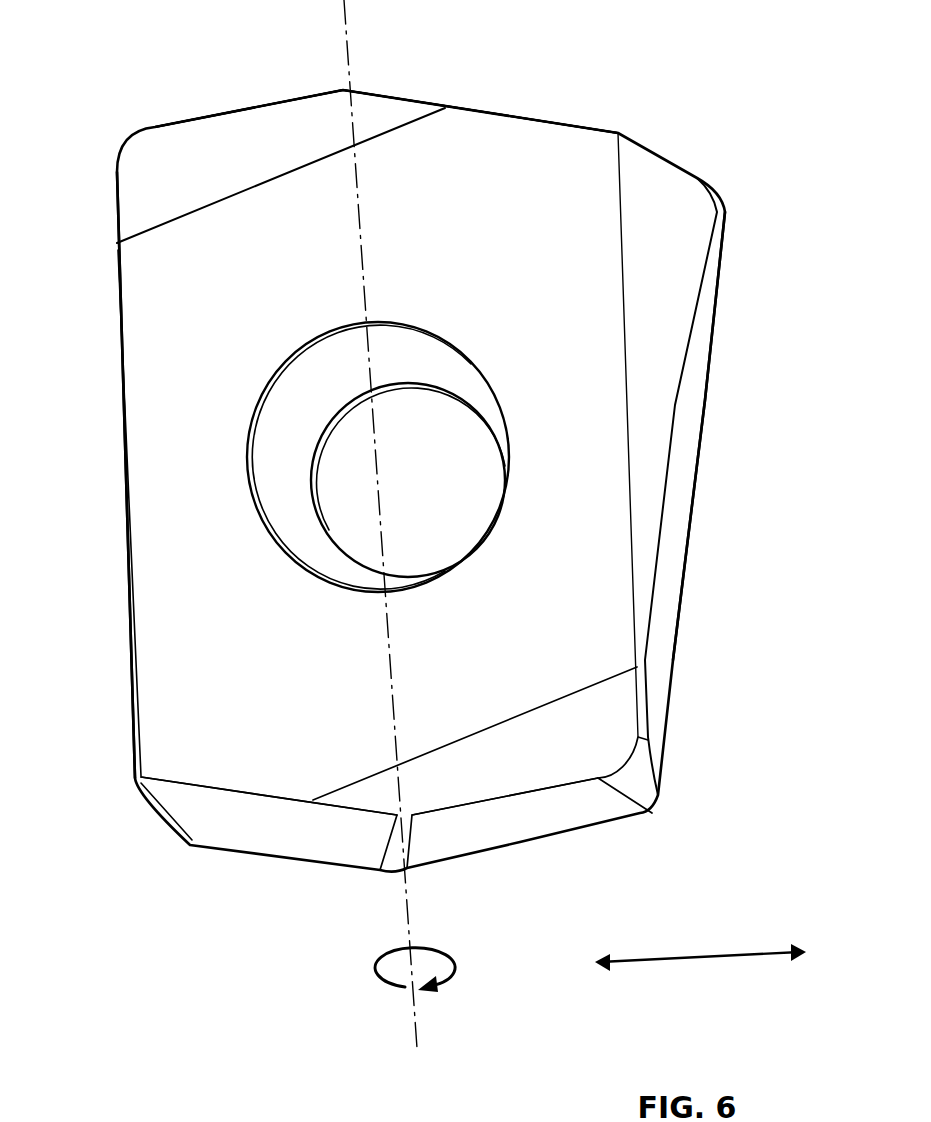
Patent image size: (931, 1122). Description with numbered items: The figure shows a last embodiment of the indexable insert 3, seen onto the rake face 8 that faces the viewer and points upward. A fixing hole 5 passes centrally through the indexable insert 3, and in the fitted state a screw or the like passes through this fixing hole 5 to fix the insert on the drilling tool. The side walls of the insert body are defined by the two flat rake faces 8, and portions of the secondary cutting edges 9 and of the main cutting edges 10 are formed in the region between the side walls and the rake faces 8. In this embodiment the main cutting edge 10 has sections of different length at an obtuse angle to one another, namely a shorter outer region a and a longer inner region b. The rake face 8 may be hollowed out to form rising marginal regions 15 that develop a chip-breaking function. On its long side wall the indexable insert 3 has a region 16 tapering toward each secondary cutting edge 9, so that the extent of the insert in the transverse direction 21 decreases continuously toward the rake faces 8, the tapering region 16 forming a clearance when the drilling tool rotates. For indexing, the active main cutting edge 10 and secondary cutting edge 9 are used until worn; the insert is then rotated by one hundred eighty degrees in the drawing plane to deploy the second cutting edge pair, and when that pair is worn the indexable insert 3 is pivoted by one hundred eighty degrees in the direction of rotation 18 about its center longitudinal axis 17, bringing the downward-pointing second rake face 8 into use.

The indexable insert 3 is at (556, 118).
The fixing hole 5 is at (430, 495).
The rake face 8 is at (578, 195).
The secondary cutting edge 9 is at (128, 523).
The main cutting edge 10 is at (402, 100).
The rising marginal region 15 is at (170, 183).
The tapering region 16 is at (653, 257).
The center longitudinal axis 17 is at (417, 1007).
The direction of rotation 18 is at (450, 977).
The transverse direction 21 is at (707, 958).
The shorter outer region a is at (215, 113).
The longer inner region b is at (490, 113).